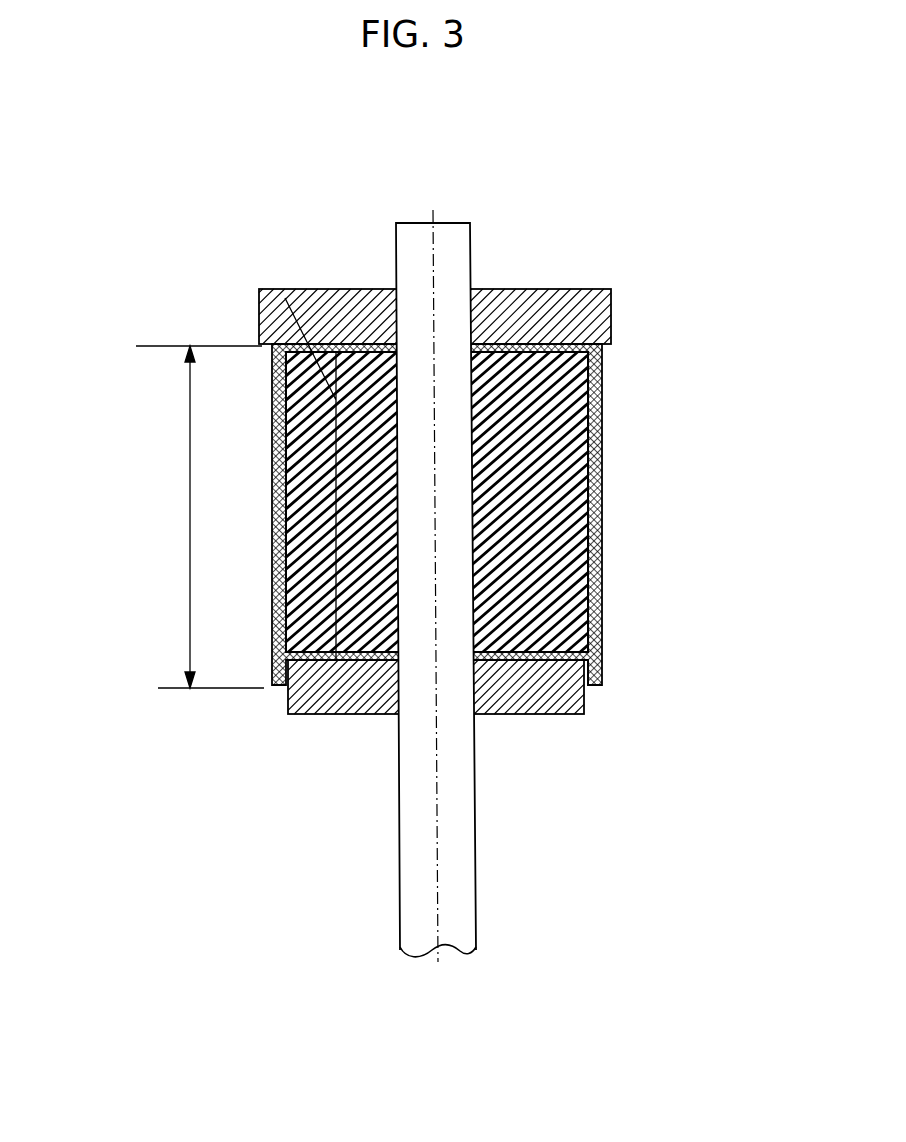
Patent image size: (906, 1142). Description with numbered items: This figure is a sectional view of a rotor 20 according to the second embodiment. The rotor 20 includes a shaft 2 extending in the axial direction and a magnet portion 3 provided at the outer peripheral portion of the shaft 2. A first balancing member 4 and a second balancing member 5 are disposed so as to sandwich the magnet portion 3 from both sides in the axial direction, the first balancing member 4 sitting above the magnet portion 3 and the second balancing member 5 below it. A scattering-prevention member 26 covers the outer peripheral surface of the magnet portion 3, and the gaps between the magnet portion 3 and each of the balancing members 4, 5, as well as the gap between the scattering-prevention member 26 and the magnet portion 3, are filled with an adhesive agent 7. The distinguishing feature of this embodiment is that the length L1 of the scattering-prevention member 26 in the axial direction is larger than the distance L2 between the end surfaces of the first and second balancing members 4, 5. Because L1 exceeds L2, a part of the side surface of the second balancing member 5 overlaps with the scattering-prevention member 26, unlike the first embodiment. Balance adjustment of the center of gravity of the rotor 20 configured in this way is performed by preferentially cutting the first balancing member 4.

The shaft 2 is at (457, 867).
The magnet portion 3 is at (538, 520).
The first balancing member 4 is at (612, 299).
The second balancing member 5 is at (497, 702).
The adhesive agent 7 is at (587, 694).
The rotor 20 is at (575, 189).
The scattering-prevention member 26 is at (602, 428).
The length of the scattering-prevention member L1 is at (190, 510).
The distance between the end surfaces of the balancing members L2 is at (258, 333).